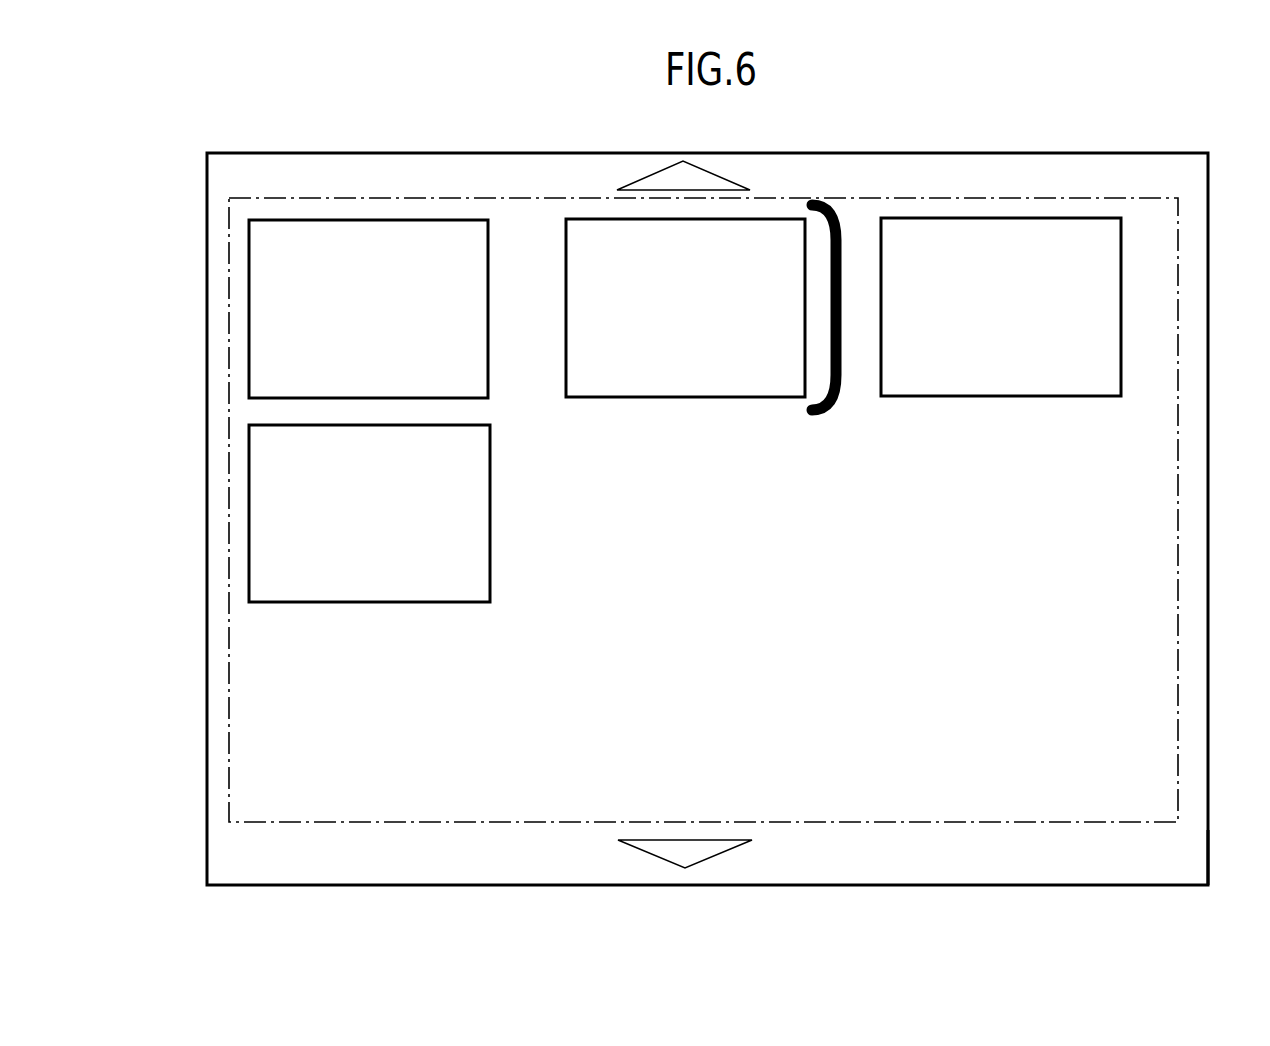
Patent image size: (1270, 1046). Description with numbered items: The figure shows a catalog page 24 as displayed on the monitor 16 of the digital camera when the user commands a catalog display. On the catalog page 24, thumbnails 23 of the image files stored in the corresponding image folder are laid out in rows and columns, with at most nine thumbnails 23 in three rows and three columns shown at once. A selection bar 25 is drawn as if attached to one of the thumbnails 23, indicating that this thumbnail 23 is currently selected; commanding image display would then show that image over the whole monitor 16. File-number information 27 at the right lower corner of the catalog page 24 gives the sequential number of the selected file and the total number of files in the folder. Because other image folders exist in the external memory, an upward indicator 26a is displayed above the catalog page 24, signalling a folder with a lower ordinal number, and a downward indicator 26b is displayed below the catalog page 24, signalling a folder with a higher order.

The monitor 16 is at (207, 850).
The thumbnails 23 is at (659, 398).
The catalog page 24 is at (230, 323).
The selection bar 25 is at (817, 416).
The upward indicator 26a is at (660, 172).
The downward indicator 26b is at (659, 862).
The file-number information 27 is at (1165, 850).